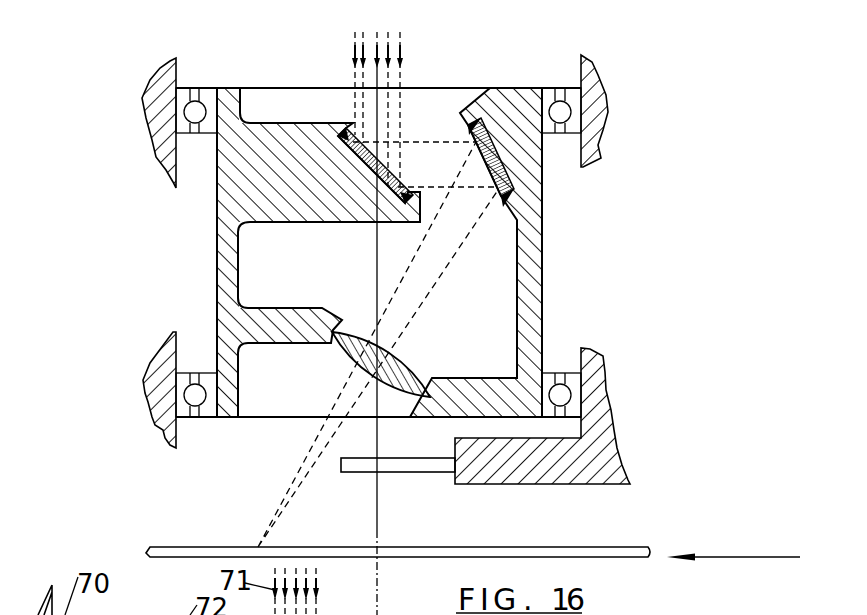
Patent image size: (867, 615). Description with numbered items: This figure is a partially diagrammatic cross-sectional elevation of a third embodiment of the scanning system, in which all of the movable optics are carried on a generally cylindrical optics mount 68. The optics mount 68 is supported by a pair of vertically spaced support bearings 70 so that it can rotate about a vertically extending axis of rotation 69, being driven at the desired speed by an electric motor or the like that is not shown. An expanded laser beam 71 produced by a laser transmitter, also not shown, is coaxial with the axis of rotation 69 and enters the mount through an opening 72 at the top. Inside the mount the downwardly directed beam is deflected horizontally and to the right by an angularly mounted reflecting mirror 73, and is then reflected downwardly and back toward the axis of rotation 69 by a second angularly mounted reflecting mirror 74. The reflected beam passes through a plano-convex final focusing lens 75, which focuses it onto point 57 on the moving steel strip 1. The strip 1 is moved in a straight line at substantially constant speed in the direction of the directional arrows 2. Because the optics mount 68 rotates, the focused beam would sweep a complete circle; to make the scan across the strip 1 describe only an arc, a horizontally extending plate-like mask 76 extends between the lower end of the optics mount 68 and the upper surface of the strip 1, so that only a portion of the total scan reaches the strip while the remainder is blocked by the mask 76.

The steel strip 1 is at (181, 548).
The directional arrows 2 is at (711, 557).
The point 57 is at (262, 546).
The optics mount 68 is at (546, 250).
The axis of rotation 69 is at (377, 245).
The support bearings 70 is at (182, 90).
The expanded laser beam 71 is at (356, 55).
The opening 72 is at (430, 100).
The reflecting mirror 73 is at (375, 163).
The second reflecting mirror 74 is at (488, 127).
The plano-convex final focusing lens 75 is at (387, 350).
The mask 76 is at (392, 458).